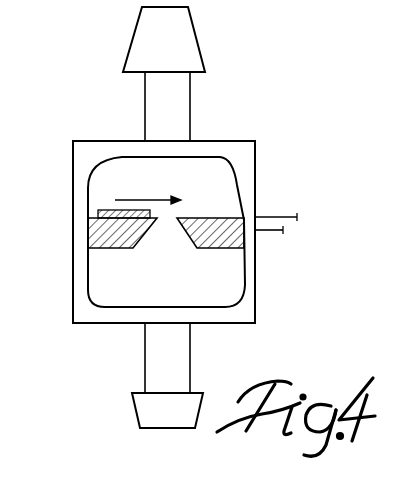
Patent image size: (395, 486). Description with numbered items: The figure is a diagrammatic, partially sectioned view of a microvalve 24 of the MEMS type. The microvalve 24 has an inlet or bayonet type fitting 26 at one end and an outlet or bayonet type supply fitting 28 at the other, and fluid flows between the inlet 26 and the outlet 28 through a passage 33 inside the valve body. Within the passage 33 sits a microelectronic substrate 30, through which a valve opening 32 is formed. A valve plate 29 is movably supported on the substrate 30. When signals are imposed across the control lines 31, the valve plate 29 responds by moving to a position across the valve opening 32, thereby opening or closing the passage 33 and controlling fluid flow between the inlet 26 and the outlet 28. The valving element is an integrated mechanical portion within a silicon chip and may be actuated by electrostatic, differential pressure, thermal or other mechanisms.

The microvalve 24 is at (202, 232).
The inlet fitting 26 is at (178, 358).
The outlet supply fitting 28 is at (178, 97).
The valve plate 29 is at (103, 210).
The microelectronic substrate 30 is at (100, 237).
The control lines 31 is at (283, 231).
The valve opening 32 is at (159, 221).
The passage 33 is at (215, 168).